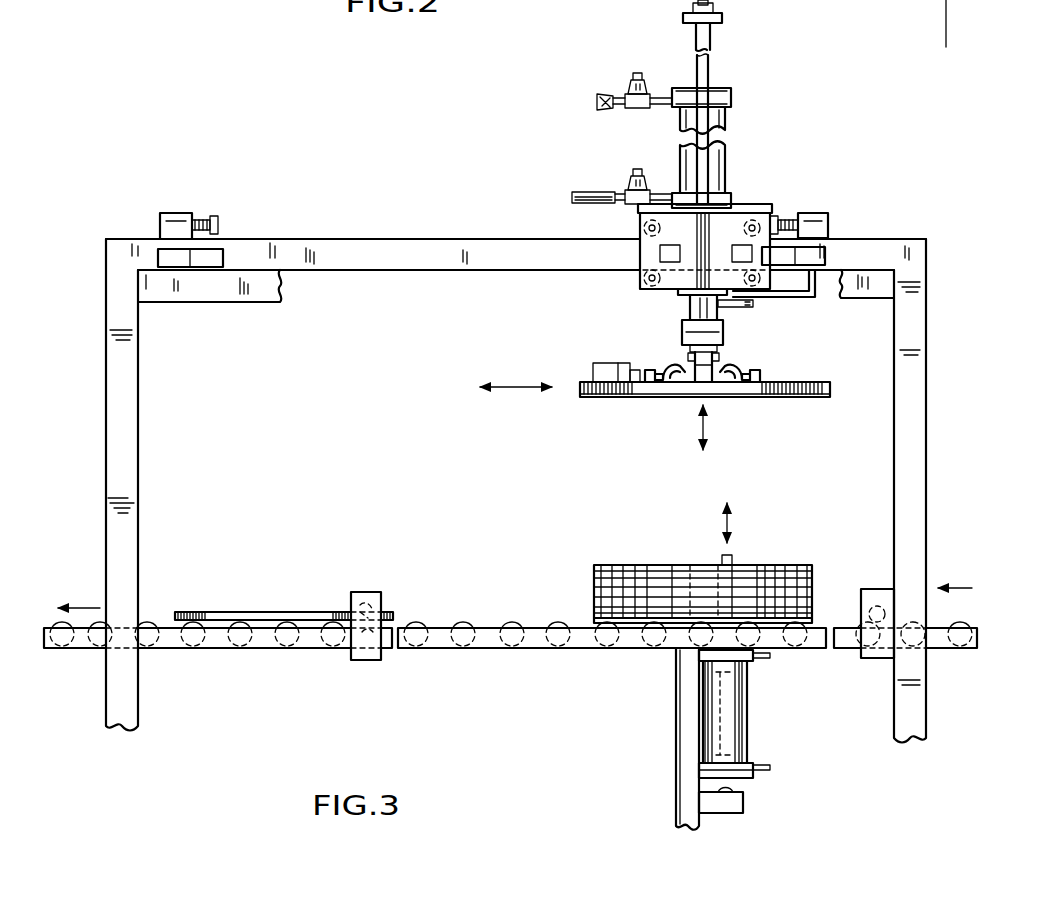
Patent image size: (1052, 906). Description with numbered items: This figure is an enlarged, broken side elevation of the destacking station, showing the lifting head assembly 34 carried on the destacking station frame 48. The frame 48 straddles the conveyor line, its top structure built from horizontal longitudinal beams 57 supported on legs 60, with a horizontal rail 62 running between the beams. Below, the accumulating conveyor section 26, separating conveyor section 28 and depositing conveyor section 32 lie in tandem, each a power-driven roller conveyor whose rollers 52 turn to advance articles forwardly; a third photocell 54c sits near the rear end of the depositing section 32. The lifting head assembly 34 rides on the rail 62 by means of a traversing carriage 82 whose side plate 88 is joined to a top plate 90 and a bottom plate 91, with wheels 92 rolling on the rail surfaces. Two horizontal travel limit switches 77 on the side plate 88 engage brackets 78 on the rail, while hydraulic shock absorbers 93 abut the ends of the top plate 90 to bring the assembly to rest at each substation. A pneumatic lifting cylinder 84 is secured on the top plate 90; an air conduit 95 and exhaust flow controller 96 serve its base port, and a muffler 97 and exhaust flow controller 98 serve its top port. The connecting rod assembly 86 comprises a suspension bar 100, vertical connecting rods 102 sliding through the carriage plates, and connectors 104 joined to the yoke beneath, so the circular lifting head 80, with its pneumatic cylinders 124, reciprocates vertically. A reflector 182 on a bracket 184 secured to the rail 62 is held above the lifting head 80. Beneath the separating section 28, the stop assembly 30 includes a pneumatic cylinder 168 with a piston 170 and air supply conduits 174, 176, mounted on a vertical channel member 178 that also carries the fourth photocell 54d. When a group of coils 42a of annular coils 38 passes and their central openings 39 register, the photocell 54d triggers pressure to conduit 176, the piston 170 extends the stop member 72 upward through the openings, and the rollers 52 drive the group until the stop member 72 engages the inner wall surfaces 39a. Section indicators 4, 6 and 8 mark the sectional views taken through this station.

The lifting head assembly 34 is at (519, 106).
The destacking station frame 48 is at (505, 488).
The rail 62 is at (385, 272).
The legs 60 is at (110, 735).
The longitudinal beams 57 is at (200, 302).
The hydraulic shock absorbers 93 is at (175, 213).
The brackets 78 is at (205, 252).
The side plate 88 is at (655, 258).
The wheels 92 is at (640, 227).
The horizontal travel limit switches 77 is at (663, 262).
The traversing carriage 82 is at (764, 205).
The top plate 90 is at (758, 206).
The pneumatic lifting cylinder 84 is at (727, 163).
The connecting rods 102 is at (710, 66).
The suspension bar 100 is at (683, 18).
The connecting rod assembly 86 is at (726, 18).
The exhaust flow controller 98 is at (635, 80).
The muffler 97 is at (605, 95).
The exhaust flow controller 96 is at (635, 178).
The air conduit 95 is at (585, 194).
The bottom plate 91 is at (690, 293).
The connectors 104 is at (695, 318).
The reflector 182 is at (740, 308).
The bracket 184 is at (838, 268).
The lifting head 80 is at (838, 381).
The pneumatic cylinders 124 is at (752, 368).
The section line 6 is at (588, 333).
The section line 8 is at (548, 570).
The section line 4 is at (915, 753).
The depositing conveyor section 32 is at (200, 650).
The separating conveyor section 28 is at (466, 649).
The rollers 52 is at (512, 622).
The accumulating conveyor section 26 is at (940, 648).
The coils 38 is at (185, 612).
The third photocell 54c is at (367, 661).
The fourth photocell 54d is at (725, 814).
The central opening 39 is at (677, 565).
The group of coils 42a is at (609, 565).
The inner wall surface 39a is at (677, 590).
The stop member 72 is at (733, 557).
The stop assembly 30 is at (699, 731).
The channel member 178 is at (685, 810).
The pneumatic cylinder 168 is at (750, 708).
The piston 170 is at (748, 720).
The air supply conduit 174 is at (760, 658).
The air supply conduit 176 is at (758, 770).